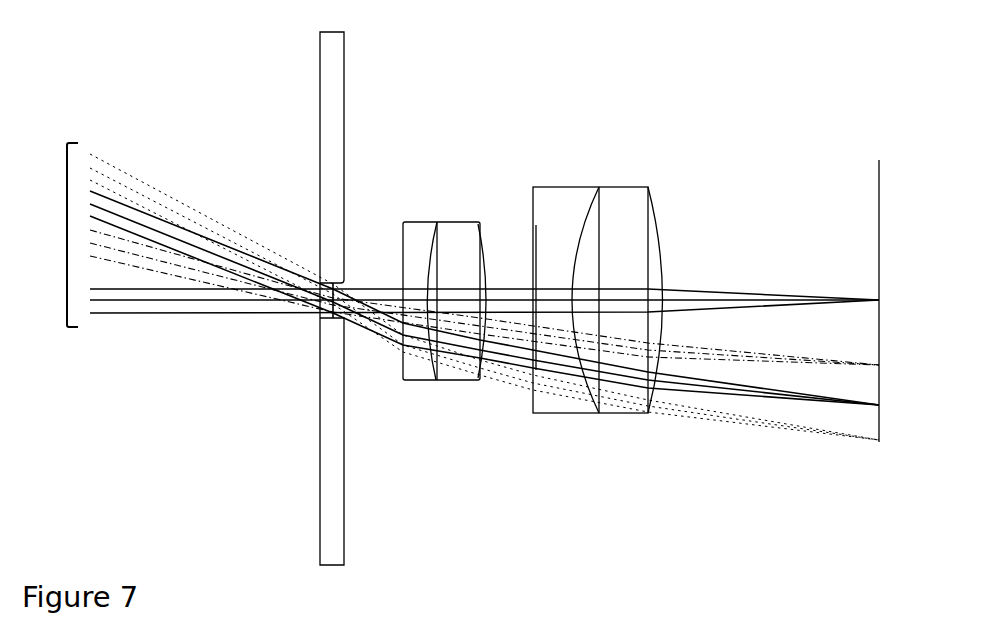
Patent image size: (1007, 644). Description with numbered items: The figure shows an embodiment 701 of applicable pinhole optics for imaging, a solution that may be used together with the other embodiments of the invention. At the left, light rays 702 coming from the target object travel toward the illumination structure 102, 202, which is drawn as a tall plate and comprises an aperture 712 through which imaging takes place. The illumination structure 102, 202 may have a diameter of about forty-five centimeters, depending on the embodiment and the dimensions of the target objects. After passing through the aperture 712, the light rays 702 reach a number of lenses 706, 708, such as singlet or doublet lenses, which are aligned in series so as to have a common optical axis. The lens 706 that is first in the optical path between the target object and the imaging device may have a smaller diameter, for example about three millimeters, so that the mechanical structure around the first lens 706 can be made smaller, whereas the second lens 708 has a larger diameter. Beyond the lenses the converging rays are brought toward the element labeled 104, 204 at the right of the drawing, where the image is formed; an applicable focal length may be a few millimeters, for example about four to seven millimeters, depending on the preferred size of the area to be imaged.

The embodiment of pinhole optics for imaging 701 is at (118, 33).
The light rays 702 is at (67, 236).
The illumination structure 102 is at (298, 298).
The illumination structure 202 is at (300, 298).
The aperture 712 is at (312, 317).
The first lens 706 is at (449, 319).
The second lens 708 is at (598, 318).
The image plane / detector 104 is at (877, 271).
The image plane / detector 204 is at (877, 285).